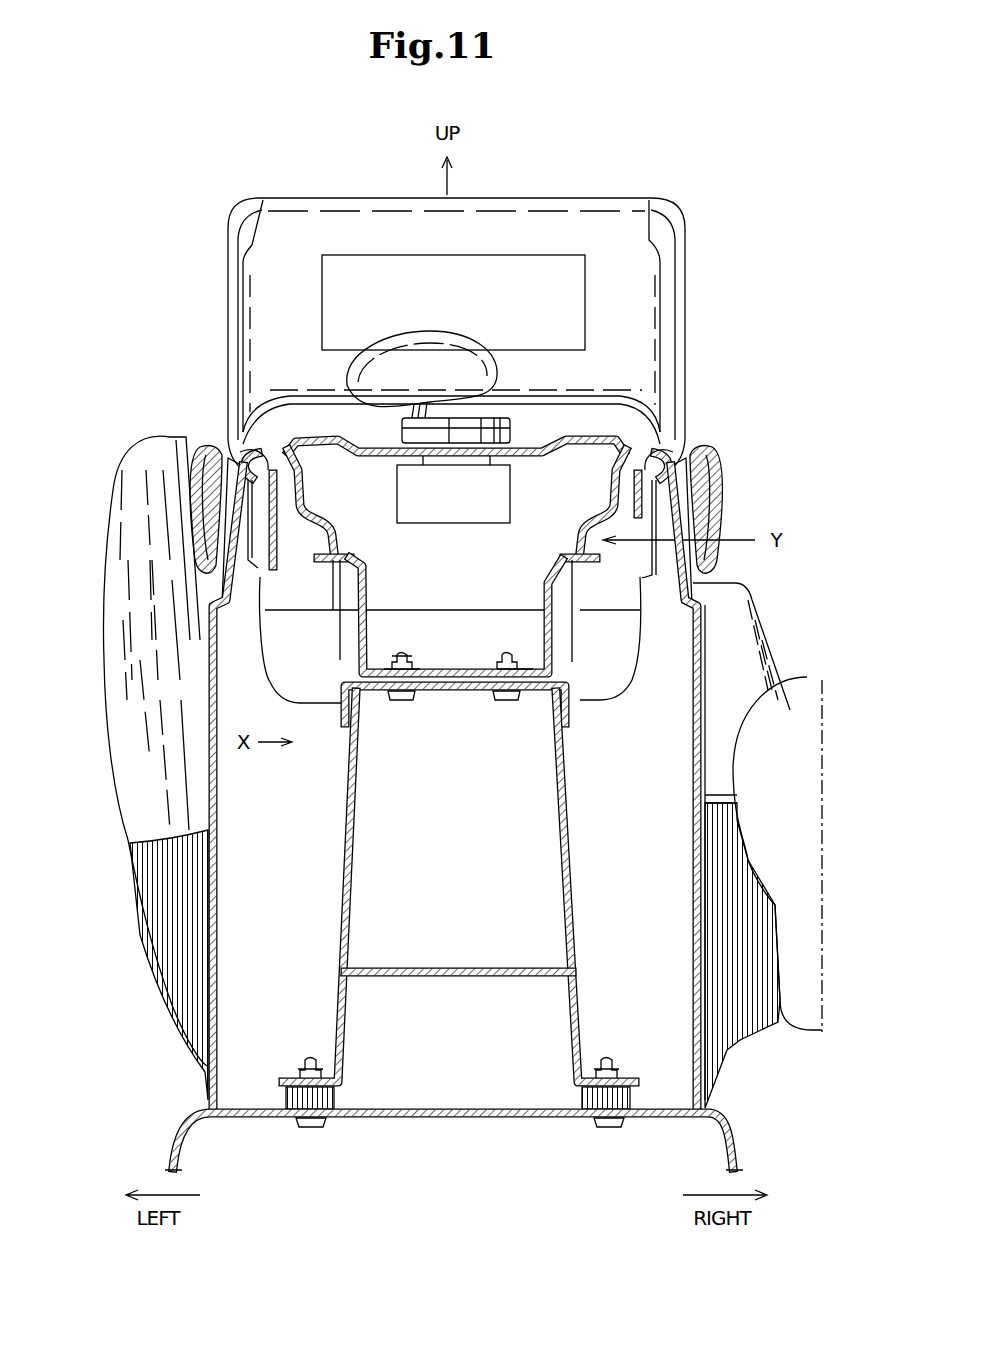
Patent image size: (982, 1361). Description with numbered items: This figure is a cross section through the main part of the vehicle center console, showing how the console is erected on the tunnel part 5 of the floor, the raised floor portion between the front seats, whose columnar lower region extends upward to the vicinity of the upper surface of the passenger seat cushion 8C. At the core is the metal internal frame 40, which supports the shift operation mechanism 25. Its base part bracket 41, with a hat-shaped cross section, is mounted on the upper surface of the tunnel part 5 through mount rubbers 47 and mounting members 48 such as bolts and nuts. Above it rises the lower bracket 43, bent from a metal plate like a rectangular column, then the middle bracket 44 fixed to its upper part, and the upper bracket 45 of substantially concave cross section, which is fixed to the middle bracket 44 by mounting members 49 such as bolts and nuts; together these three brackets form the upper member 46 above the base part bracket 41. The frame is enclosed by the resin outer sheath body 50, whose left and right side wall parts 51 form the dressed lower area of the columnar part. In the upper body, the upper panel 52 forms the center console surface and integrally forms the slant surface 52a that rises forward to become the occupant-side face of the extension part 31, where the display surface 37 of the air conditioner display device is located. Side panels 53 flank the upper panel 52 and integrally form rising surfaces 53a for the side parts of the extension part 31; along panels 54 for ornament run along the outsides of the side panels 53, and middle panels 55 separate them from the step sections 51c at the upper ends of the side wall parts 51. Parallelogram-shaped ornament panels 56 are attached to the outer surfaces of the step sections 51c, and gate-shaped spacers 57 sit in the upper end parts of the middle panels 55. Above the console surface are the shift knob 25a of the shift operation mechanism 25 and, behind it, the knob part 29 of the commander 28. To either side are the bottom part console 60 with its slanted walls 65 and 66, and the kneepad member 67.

The tunnel part 5 is at (446, 1101).
The seat cushion 8C is at (813, 680).
The shift operation mechanism 25 is at (422, 344).
The shift knob 25a is at (402, 358).
The commander 28 is at (441, 504).
The knob part 29 is at (466, 425).
The extension part 31 is at (705, 311).
The display surface 37 is at (570, 292).
The internal frame 40 is at (324, 809).
The base part bracket 41 is at (470, 970).
The lower bracket 43 is at (459, 887).
The middle bracket 44 is at (572, 692).
The upper bracket 45 is at (443, 670).
The upper member 46 is at (578, 774).
The mount rubber 47 is at (632, 1095).
The mounting member 48 is at (615, 1127).
The mounting member 49 is at (504, 703).
The outer sheath body 50 is at (198, 775).
The side wall part 51 is at (692, 893).
The step section 51c is at (670, 580).
The upper panel 52 is at (522, 440).
The slant surface 52a is at (598, 226).
The side panel 53 is at (612, 490).
The rising surface 53a is at (660, 357).
The along panel 54 is at (634, 507).
The middle panel 55 is at (668, 553).
The ornament panel 56 is at (702, 492).
The spacer 57 is at (645, 465).
The bottom part console 60 is at (118, 921).
The slanted wall 65 is at (174, 582).
The slanted wall 66 is at (738, 708).
The kneepad member 67 is at (130, 678).